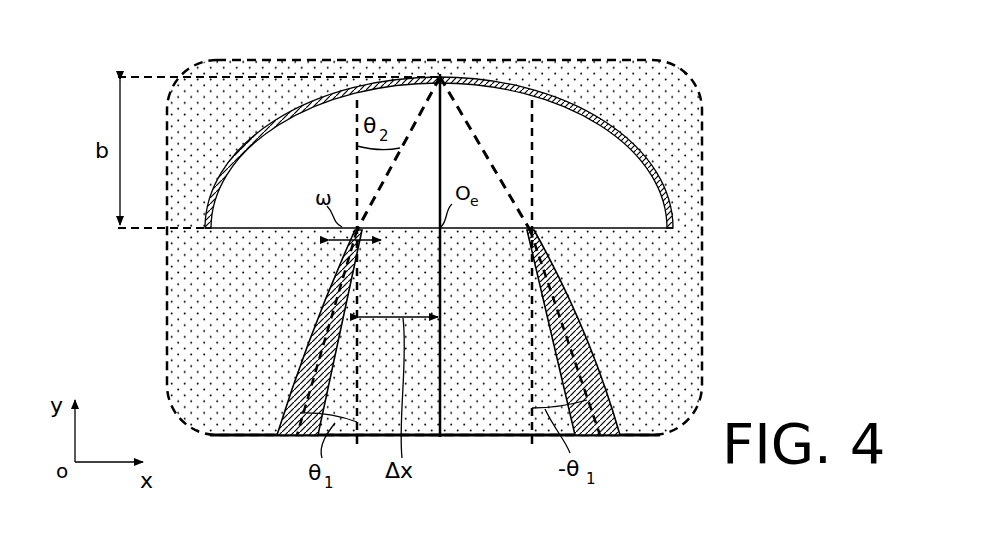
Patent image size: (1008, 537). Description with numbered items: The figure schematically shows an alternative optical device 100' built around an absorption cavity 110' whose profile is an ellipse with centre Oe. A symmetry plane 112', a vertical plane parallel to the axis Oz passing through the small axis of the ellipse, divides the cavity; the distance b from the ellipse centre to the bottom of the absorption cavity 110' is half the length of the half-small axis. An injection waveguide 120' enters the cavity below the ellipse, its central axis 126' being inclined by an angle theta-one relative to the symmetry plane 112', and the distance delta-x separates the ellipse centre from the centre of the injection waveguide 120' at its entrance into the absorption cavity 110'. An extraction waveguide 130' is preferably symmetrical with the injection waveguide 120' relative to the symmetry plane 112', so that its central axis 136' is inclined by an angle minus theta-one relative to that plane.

The optical lens 100' is at (496, 247).
The absorption cavity 110' is at (515, 152).
The symmetry plane 112' is at (398, 226).
The injection waveguide 120' is at (225, 332).
The central axis of the injection waveguide 126' is at (219, 332).
The extraction waveguide 130' is at (673, 332).
The central axis of the extraction waveguide 136' is at (675, 332).